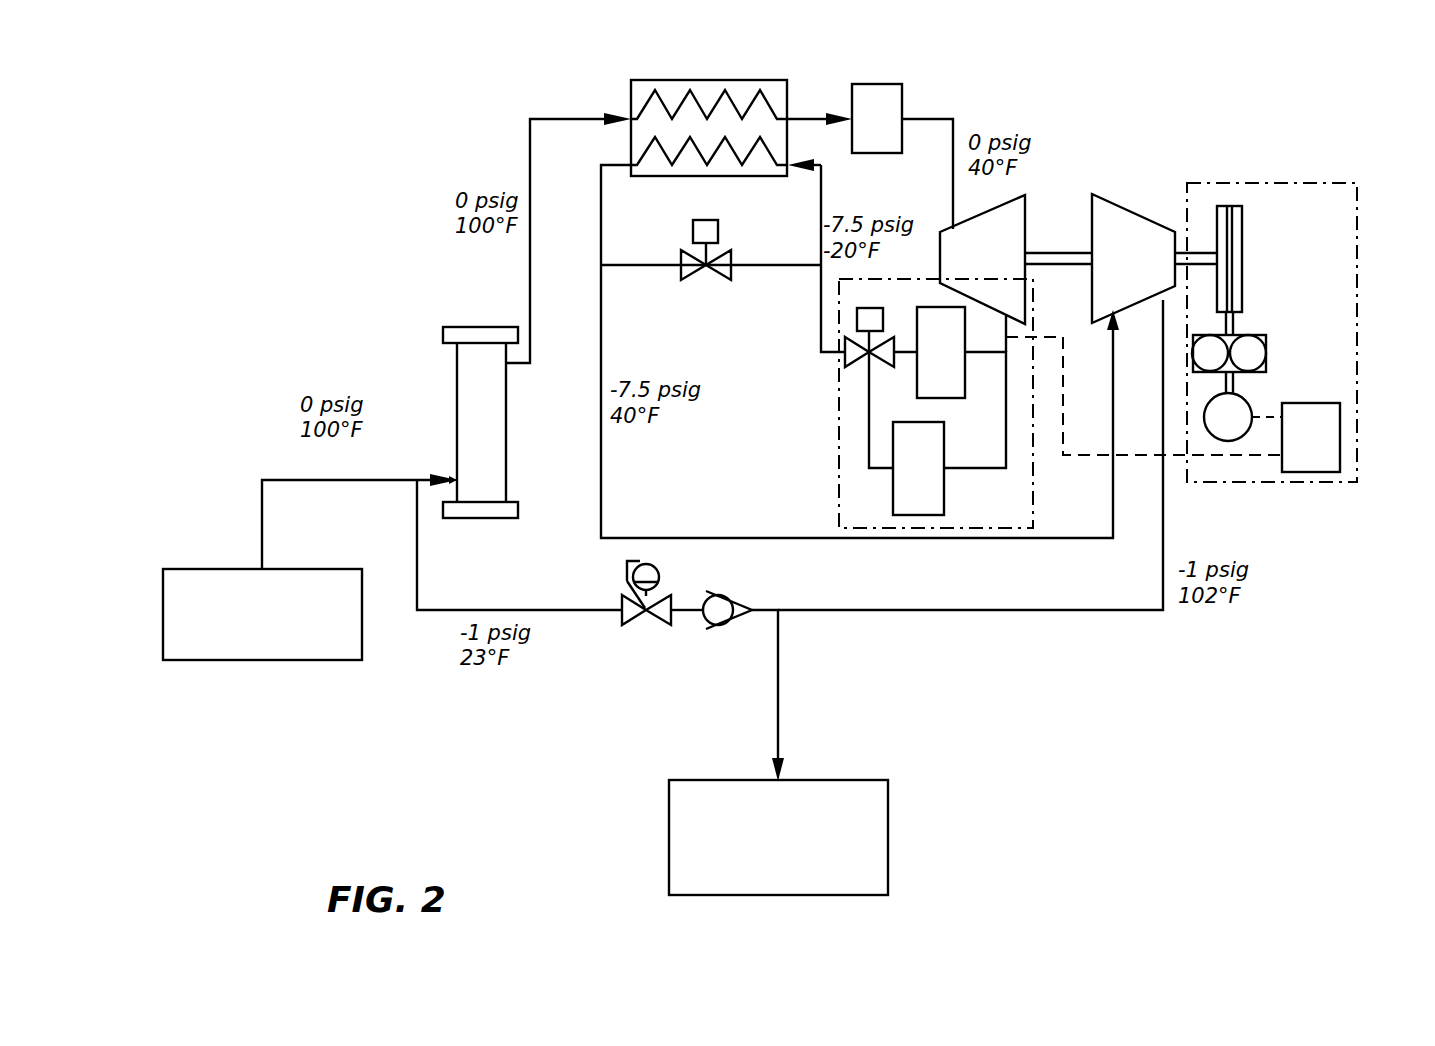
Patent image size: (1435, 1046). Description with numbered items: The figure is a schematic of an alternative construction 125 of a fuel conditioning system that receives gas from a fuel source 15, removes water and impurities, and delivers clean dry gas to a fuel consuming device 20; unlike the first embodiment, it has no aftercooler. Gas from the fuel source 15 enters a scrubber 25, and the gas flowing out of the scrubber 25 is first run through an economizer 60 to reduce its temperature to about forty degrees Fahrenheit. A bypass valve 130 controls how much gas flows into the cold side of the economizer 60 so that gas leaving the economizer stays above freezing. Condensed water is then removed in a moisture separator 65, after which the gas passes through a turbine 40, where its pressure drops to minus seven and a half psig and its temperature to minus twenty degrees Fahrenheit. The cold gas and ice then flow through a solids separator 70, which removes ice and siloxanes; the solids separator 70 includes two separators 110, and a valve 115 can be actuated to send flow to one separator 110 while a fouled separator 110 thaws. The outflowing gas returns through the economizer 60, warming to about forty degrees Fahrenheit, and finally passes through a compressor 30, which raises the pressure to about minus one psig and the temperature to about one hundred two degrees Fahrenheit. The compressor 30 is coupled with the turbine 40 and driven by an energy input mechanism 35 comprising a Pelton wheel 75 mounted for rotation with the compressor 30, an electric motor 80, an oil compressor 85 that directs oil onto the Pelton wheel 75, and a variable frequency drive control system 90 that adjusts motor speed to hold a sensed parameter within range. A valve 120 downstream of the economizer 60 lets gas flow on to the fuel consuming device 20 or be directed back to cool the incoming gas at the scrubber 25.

The alternative construction of the fuel conditioning system 125 is at (378, 192).
The fuel source 15 is at (163, 603).
The fuel consuming device 20 is at (888, 812).
The scrubber 25 is at (457, 413).
The economizer 60 is at (668, 80).
The moisture separator 65 is at (878, 84).
The turbine 40 is at (1015, 217).
The compressor 30 is at (1108, 210).
The energy input mechanism 35 is at (1357, 230).
The Pelton wheel 75 is at (1242, 232).
The oil compressor 85 is at (1248, 335).
The electric motor 80 is at (1250, 403).
The variable frequency drive control system 90 is at (1332, 430).
The solids separator 70 is at (838, 500).
The valve 115 is at (857, 318).
The separators 110 is at (965, 378).
The bypass valve 130 is at (697, 275).
The valve 120 is at (637, 618).